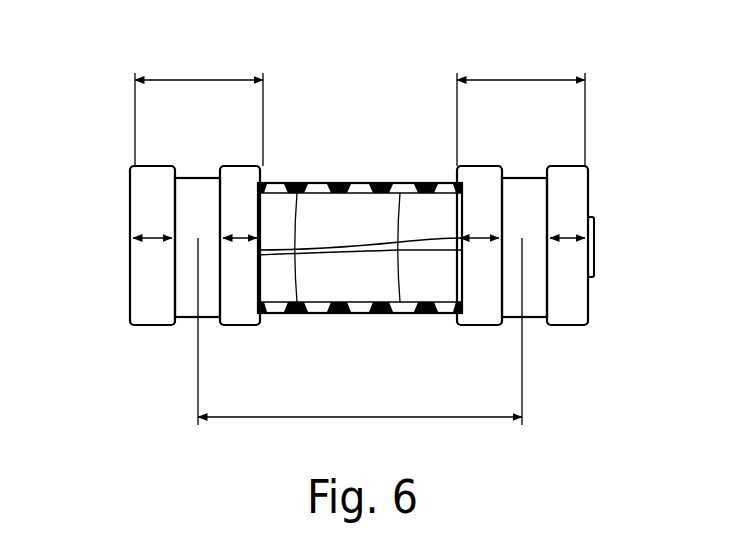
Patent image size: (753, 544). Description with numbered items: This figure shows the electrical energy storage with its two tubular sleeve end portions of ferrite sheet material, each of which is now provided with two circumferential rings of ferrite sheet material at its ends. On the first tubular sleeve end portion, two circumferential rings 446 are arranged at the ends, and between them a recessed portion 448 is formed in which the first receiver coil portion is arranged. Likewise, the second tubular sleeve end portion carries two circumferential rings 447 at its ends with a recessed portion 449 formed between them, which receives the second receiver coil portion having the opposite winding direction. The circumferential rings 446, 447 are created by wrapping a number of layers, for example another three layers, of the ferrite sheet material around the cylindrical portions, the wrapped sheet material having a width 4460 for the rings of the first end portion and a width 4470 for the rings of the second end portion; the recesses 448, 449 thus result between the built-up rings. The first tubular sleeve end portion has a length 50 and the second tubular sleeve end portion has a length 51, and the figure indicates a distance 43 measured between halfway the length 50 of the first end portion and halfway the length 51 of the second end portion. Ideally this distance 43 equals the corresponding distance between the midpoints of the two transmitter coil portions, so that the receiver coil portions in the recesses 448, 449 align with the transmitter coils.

The distance 43 is at (361, 417).
The length of the first tubular sleeve end portion 50 is at (175, 80).
The length of the second tubular sleeve end portion 51 is at (510, 80).
The circumferential rings 446 is at (154, 170).
The circumferential rings 447 is at (476, 172).
The recessed portion 448 is at (196, 185).
The recessed portion 449 is at (507, 180).
The width 4460 is at (150, 240).
The width 4470 is at (483, 238).